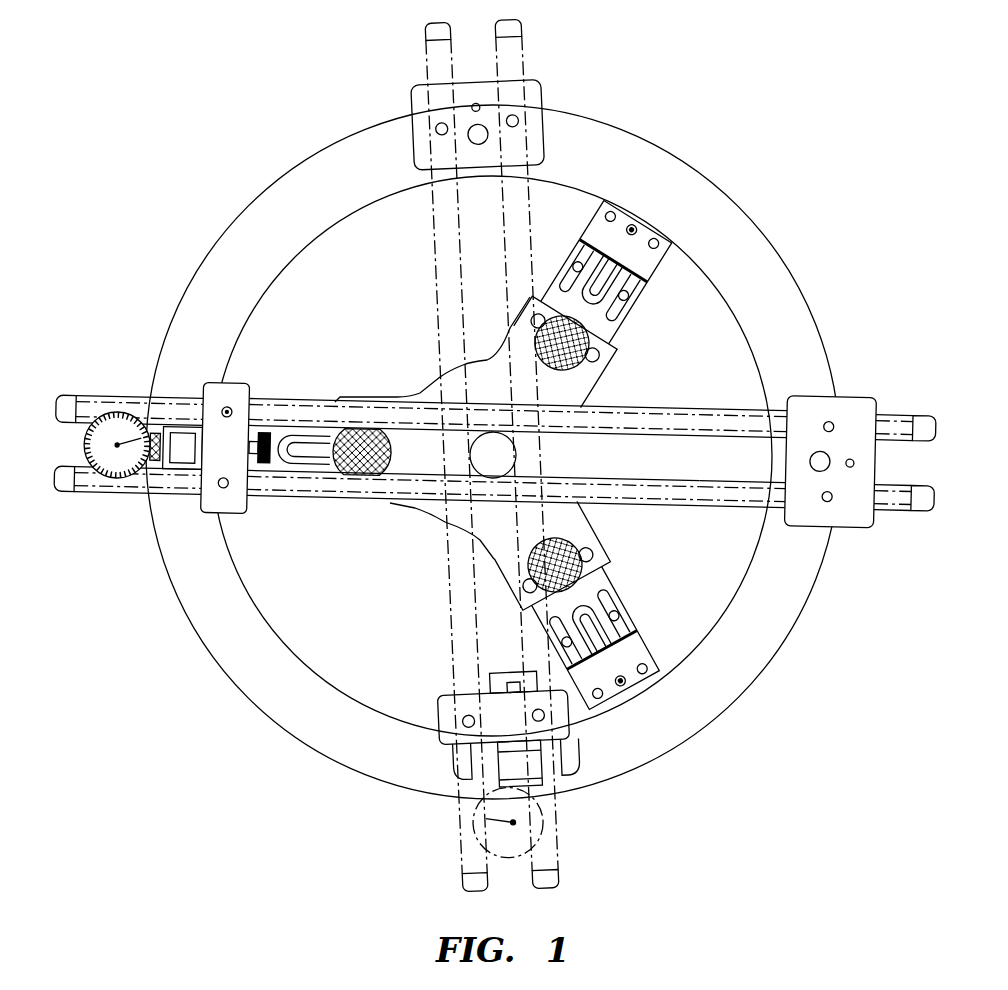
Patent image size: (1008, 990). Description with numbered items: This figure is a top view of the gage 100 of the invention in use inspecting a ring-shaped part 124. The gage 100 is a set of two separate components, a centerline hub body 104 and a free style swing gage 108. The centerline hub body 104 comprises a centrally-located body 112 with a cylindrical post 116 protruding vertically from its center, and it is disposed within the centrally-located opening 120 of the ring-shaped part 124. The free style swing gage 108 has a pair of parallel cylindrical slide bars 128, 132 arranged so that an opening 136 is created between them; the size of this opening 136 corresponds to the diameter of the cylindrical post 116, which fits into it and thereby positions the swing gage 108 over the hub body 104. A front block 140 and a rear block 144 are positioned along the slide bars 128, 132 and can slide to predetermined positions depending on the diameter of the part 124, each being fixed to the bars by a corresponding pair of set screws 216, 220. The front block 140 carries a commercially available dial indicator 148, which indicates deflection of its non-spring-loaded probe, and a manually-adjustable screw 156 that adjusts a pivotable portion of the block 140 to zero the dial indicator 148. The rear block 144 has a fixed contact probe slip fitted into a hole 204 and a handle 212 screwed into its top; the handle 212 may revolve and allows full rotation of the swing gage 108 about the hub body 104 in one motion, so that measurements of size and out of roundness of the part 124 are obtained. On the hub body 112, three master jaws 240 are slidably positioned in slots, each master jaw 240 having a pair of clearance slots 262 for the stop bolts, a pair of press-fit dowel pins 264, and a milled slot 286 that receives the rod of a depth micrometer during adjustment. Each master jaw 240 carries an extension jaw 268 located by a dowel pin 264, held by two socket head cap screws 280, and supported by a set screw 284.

The gage 100 is at (444, 452).
The centerline hub body 104 is at (481, 481).
The free style swing gage 108 is at (108, 507).
The centrally-located body 112 is at (590, 518).
The cylindrical post 116 is at (480, 445).
The centrally-located opening 120 is at (386, 330).
The ring-shaped part 124 is at (776, 232).
The cylindrical slide bar 128 is at (718, 416).
The cylindrical slide bar 132 is at (665, 481).
The opening 136 is at (728, 470).
The front block 140 is at (269, 445).
The rear block 144 is at (859, 456).
The dial indicator 148 is at (84, 445).
The manually-adjustable screw 156 is at (270, 470).
The hole 204 is at (854, 463).
The handle 212 is at (818, 470).
The set screws 216 is at (229, 412).
The set screws 220 is at (827, 423).
The master jaws 240 is at (643, 318).
The clearance slots 262 is at (555, 627).
The dowel pins 264 is at (630, 296).
The extension jaw 268 is at (600, 212).
The socket head cap screws 280 is at (614, 218).
The set screw 284 is at (637, 226).
The milled slot 286 is at (621, 690).